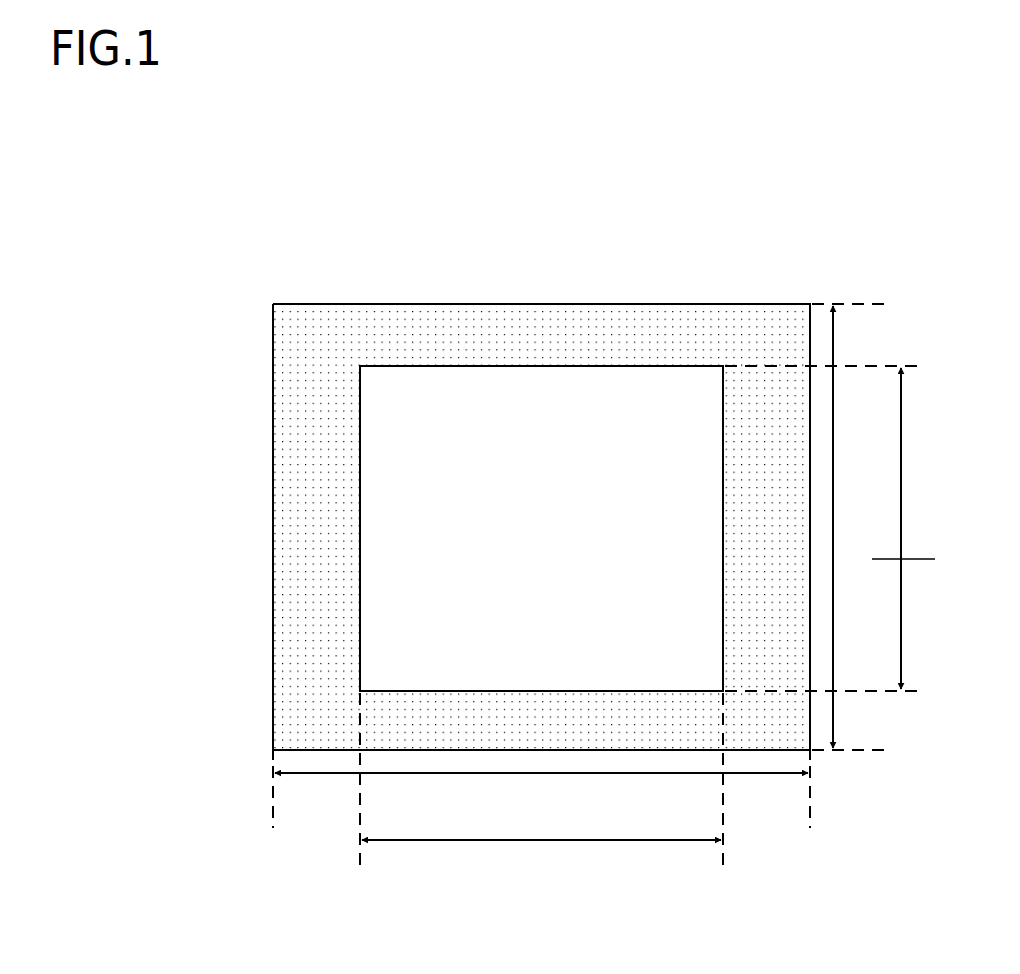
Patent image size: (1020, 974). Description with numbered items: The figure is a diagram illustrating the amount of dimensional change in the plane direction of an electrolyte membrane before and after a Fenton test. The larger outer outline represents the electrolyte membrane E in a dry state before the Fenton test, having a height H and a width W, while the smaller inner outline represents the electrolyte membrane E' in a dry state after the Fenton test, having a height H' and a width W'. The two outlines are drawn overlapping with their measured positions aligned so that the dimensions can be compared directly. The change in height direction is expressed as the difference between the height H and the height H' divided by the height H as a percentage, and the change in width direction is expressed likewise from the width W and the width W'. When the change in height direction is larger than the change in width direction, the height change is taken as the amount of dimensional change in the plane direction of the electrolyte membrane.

The electrolyte membrane E is at (541, 451).
The electrolyte membrane E' is at (541, 441).
The height H is at (851, 527).
The height H' is at (831, 528).
The width W is at (541, 797).
The width W' is at (541, 789).